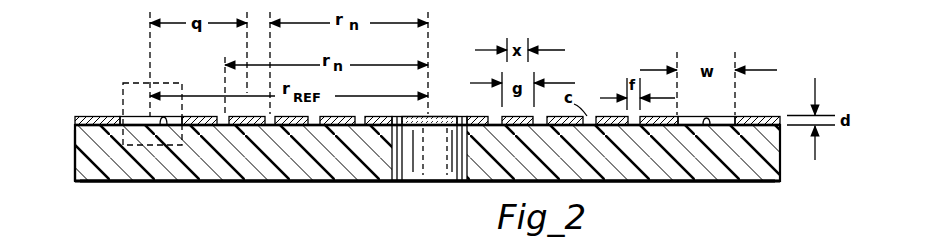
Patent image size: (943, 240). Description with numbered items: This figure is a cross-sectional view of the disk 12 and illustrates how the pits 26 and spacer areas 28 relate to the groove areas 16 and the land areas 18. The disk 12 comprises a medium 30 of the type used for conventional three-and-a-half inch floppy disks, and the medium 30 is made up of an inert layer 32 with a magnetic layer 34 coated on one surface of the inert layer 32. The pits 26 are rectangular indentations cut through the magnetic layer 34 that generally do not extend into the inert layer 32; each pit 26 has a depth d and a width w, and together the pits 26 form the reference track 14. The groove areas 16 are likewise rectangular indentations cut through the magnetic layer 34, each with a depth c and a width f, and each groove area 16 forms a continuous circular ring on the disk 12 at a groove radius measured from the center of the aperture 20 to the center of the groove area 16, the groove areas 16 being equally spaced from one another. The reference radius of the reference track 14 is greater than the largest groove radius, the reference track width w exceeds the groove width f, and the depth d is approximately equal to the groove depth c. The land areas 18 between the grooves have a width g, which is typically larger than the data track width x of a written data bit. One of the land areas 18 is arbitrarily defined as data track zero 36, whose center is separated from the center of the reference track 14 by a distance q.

The disk 12 is at (203, 190).
The reference track 14 is at (130, 82).
The groove area 16 is at (342, 126).
The land area 18 is at (246, 115).
The aperture 20 is at (428, 182).
The pit 26 is at (163, 127).
The spacer area 28 is at (143, 119).
The medium 30 is at (98, 182).
The inert layer 32 is at (74, 158).
The magnetic layer 34 is at (405, 100).
The data track zero 36 is at (247, 126).